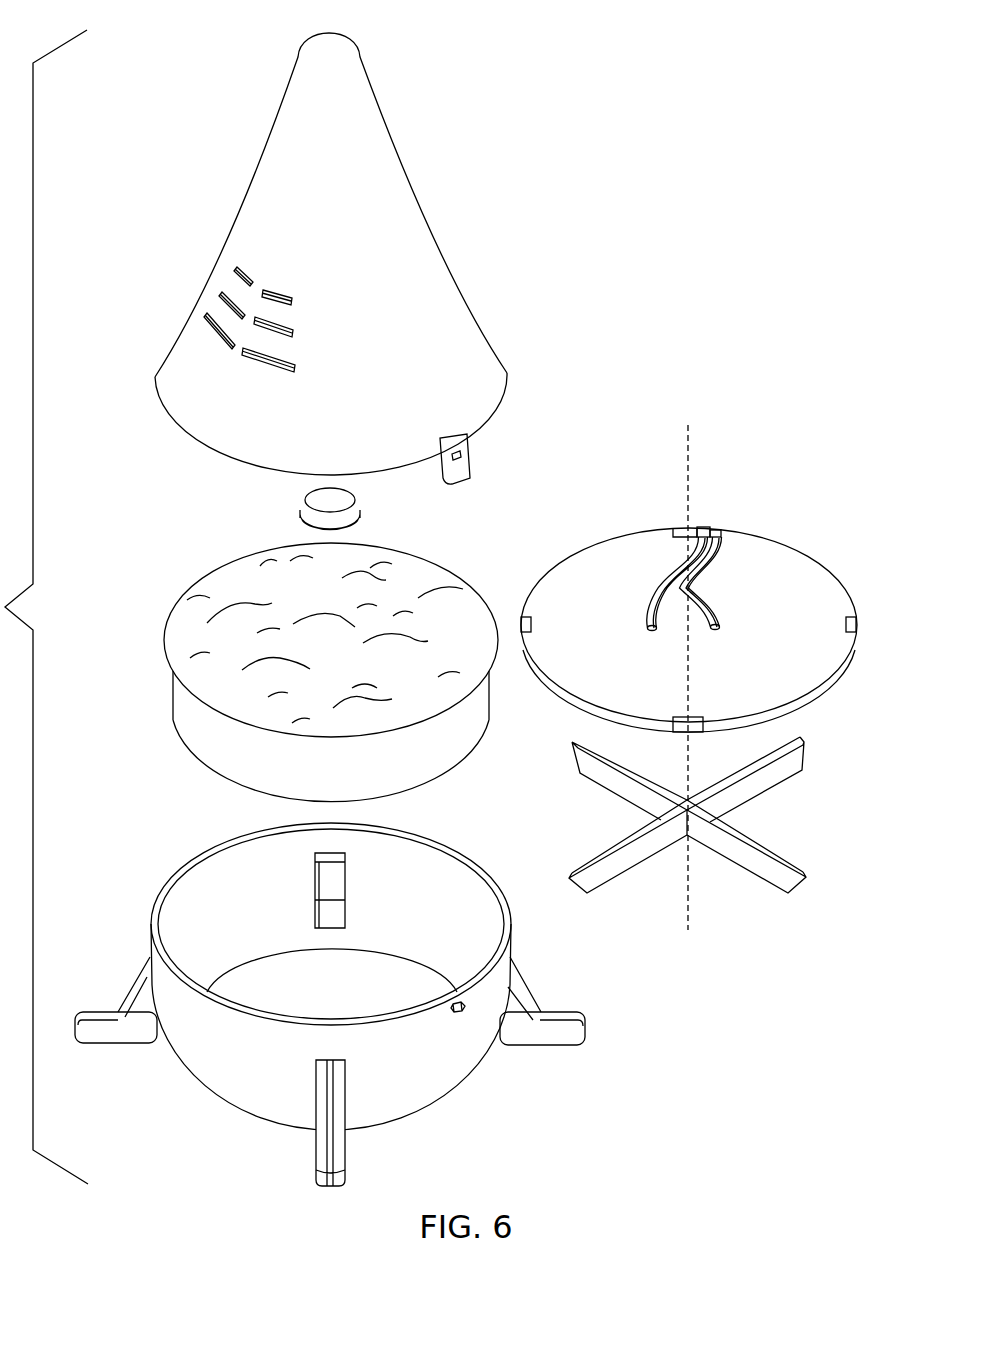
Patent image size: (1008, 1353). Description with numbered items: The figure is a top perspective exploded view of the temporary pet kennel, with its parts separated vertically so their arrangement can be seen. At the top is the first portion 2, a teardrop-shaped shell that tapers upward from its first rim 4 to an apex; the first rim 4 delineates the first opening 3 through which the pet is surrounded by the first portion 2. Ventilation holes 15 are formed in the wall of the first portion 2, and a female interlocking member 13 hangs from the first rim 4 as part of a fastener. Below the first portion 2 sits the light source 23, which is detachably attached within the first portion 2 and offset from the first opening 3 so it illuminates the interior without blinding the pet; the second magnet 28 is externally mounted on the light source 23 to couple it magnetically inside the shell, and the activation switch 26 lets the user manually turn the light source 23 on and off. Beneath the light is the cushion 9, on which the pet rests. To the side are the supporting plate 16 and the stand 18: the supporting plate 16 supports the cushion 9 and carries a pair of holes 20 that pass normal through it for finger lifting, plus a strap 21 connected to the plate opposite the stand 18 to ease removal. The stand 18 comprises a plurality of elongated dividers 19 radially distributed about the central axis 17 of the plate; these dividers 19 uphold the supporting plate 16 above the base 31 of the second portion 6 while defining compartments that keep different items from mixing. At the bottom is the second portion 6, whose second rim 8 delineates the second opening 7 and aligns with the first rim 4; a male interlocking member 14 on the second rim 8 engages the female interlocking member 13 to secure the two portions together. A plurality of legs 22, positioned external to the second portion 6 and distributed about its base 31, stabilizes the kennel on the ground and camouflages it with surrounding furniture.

The first portion 2 is at (428, 219).
The first opening 3 is at (224, 464).
The first rim 4 is at (203, 449).
The second portion 6 is at (461, 1076).
The second opening 7 is at (205, 830).
The second rim 8 is at (185, 868).
The cushion 9 is at (185, 603).
The female interlocking member 13 is at (470, 464).
The male interlocking member 14 is at (452, 1008).
The ventilation hole 15 is at (218, 276).
The supporting plate 16 is at (853, 640).
The central axis 17 is at (688, 443).
The stand 18 is at (718, 836).
The elongated dividers 19 is at (578, 758).
The pair of holes 20 is at (726, 624).
The strap 21 is at (721, 536).
The legs 22 is at (138, 1043).
The light source 23 is at (361, 511).
The activation switch 26 is at (302, 513).
The second magnet 28 is at (313, 497).
The base 31 is at (316, 1005).